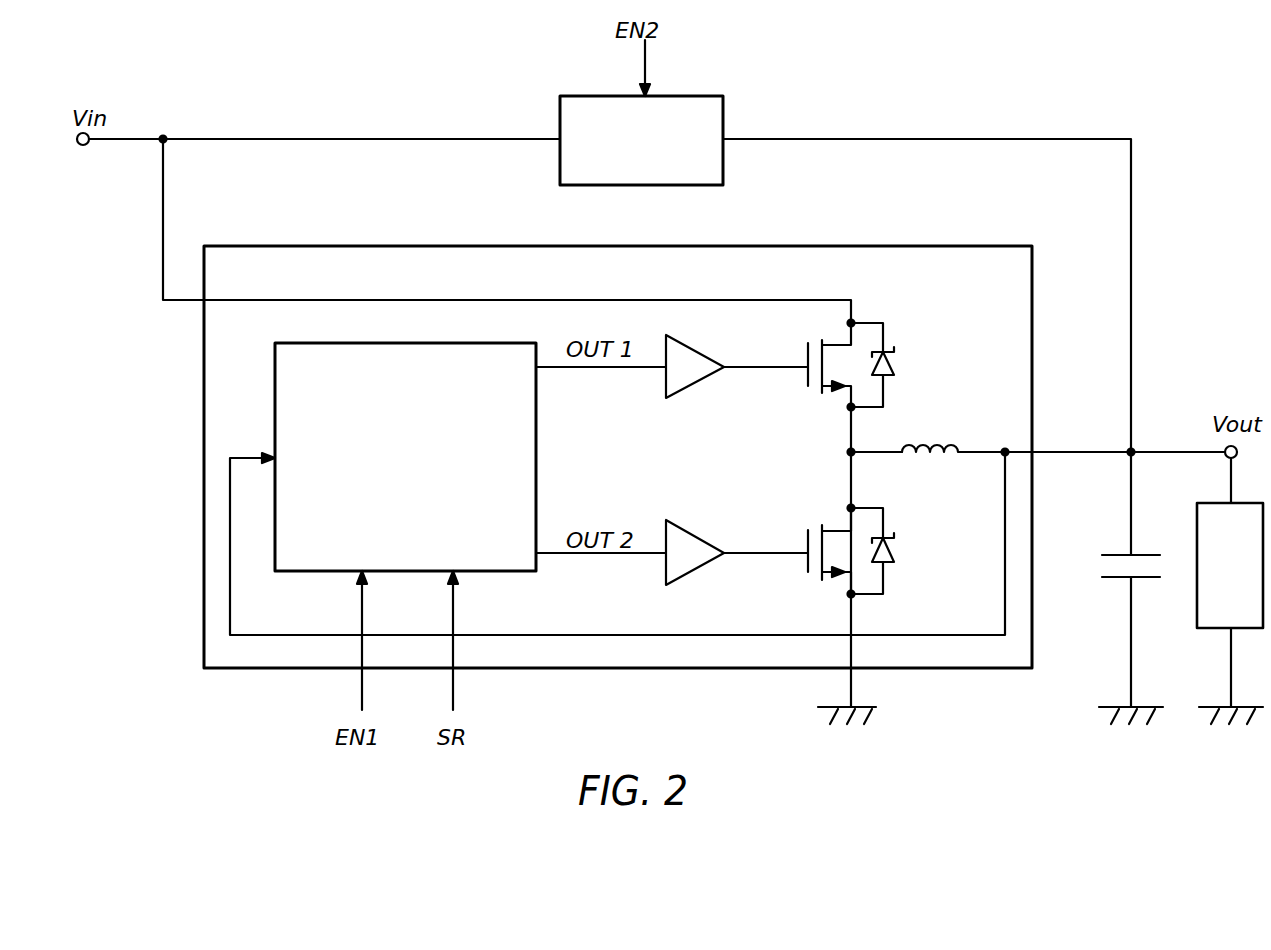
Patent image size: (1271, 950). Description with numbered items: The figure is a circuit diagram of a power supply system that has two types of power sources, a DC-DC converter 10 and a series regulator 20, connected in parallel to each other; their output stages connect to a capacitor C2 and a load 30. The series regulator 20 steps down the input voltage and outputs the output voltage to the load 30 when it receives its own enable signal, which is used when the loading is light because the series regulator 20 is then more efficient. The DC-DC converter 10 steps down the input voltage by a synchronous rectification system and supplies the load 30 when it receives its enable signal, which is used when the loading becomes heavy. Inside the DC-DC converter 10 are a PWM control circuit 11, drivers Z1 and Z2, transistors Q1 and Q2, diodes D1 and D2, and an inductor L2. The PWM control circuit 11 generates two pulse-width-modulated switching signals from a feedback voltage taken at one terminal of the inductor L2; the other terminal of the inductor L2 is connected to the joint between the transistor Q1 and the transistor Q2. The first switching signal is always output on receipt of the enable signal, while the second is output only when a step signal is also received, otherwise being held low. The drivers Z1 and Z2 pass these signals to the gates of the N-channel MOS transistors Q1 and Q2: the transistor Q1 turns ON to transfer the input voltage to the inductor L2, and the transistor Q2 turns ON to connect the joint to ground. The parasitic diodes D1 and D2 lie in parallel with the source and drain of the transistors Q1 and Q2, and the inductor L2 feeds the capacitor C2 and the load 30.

The DC-DC converter 10 is at (280, 246).
The PWM control circuit 11 is at (275, 360).
The series regulator 20 is at (687, 96).
The load 30 is at (1212, 503).
The transistor Q1 is at (808, 352).
The transistor Q2 is at (808, 540).
The parasitic diode D1 is at (893, 352).
The parasitic diode D2 is at (893, 538).
The driver Z1 is at (684, 387).
The driver Z2 is at (684, 574).
The inductor L2 is at (927, 443).
The capacitor C2 is at (1116, 578).